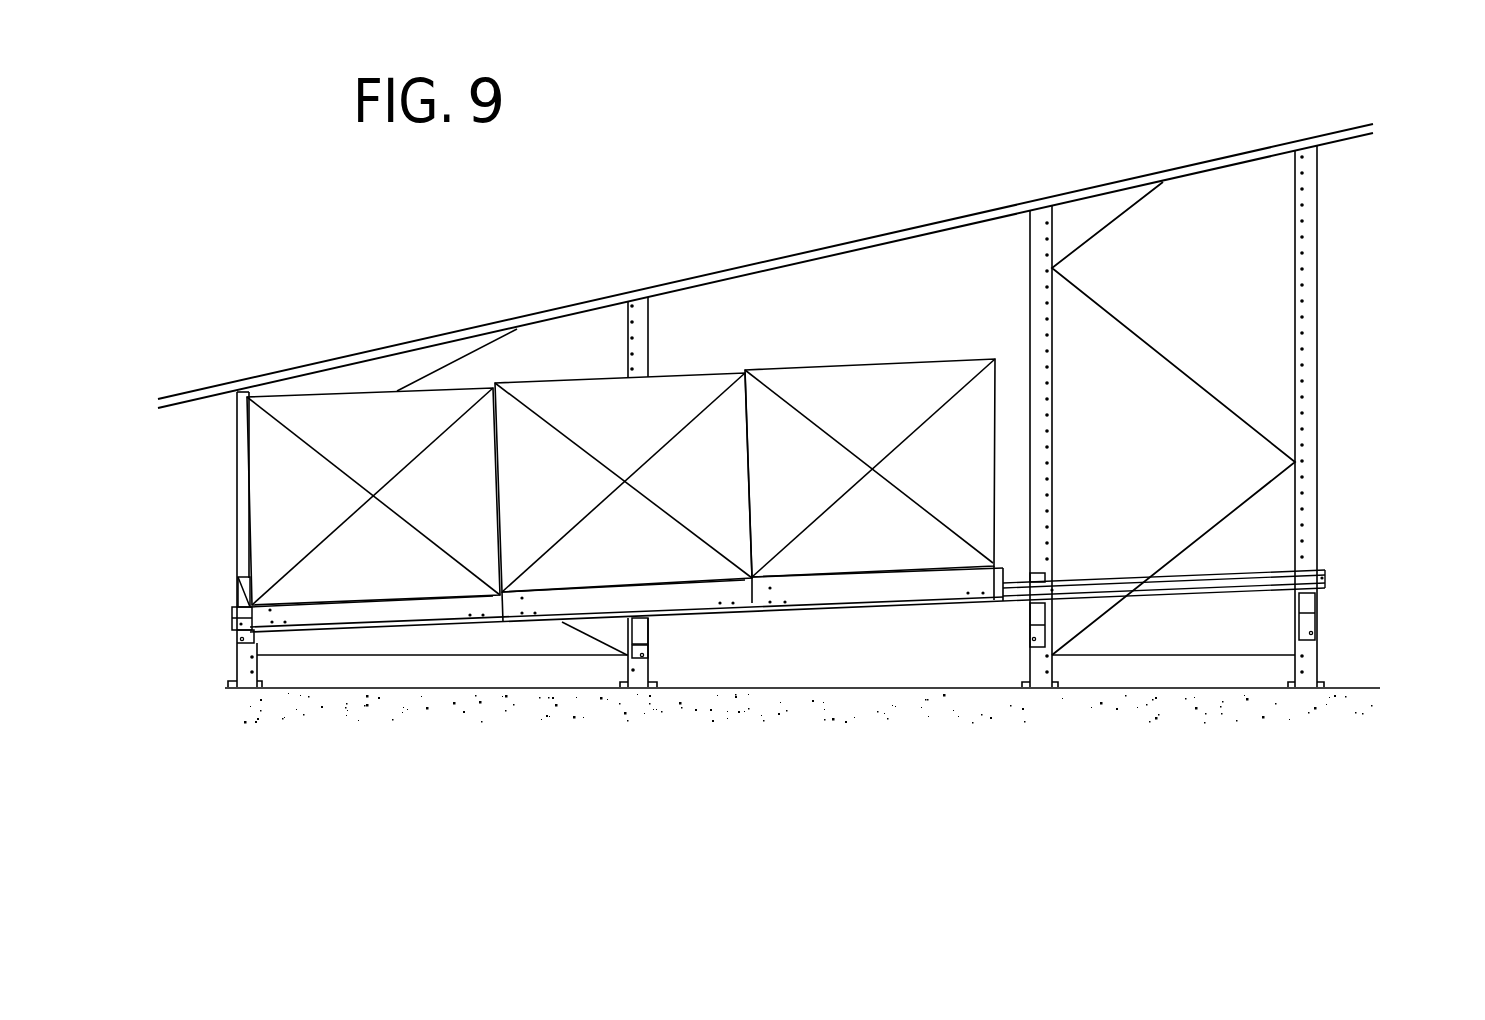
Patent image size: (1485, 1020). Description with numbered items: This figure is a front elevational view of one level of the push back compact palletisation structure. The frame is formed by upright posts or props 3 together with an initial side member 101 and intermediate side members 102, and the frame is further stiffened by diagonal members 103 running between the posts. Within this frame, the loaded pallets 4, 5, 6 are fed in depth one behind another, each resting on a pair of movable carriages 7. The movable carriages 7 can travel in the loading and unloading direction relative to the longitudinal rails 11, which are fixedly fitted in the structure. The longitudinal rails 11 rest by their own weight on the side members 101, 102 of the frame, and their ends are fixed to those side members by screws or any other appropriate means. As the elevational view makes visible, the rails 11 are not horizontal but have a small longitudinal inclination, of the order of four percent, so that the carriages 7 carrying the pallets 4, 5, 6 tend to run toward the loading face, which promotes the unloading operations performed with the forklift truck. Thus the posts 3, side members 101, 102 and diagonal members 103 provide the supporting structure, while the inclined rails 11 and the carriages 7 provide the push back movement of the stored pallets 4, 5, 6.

The upright post 3 is at (1308, 262).
The loaded pallet 4 is at (437, 404).
The loaded pallet 5 is at (690, 380).
The loaded pallet 6 is at (905, 386).
The movable carriage 7 is at (344, 608).
The longitudinal rail 11 is at (1327, 573).
The initial side member 101 is at (230, 613).
The intermediate side member 102 is at (648, 632).
The diagonal member 103 is at (1123, 210).